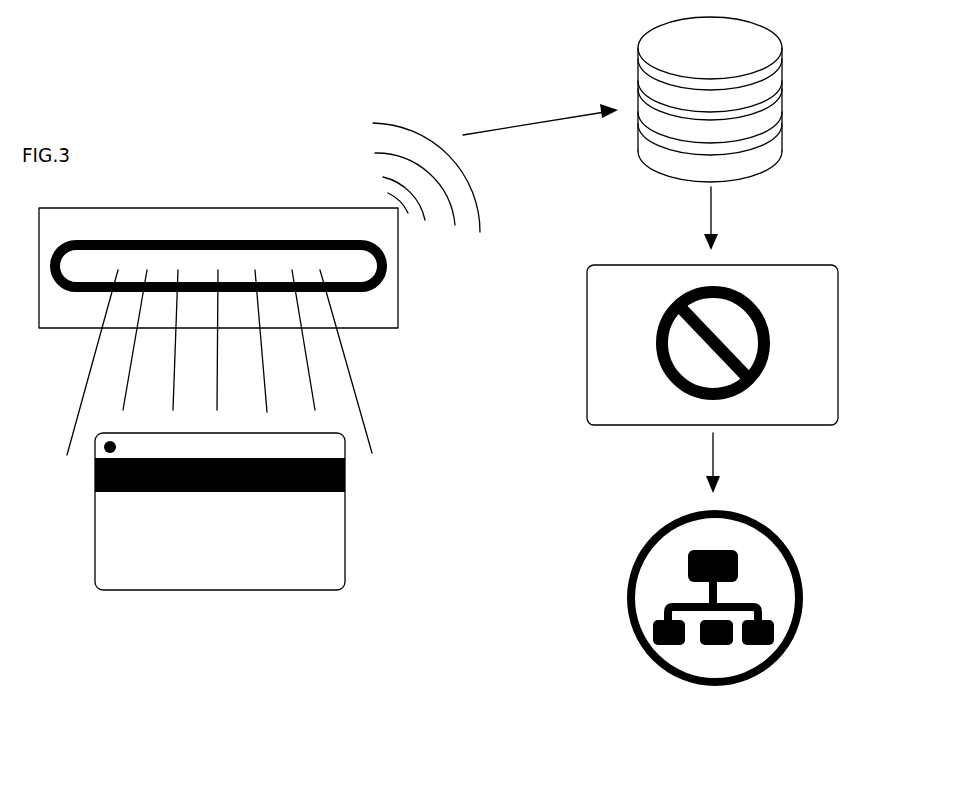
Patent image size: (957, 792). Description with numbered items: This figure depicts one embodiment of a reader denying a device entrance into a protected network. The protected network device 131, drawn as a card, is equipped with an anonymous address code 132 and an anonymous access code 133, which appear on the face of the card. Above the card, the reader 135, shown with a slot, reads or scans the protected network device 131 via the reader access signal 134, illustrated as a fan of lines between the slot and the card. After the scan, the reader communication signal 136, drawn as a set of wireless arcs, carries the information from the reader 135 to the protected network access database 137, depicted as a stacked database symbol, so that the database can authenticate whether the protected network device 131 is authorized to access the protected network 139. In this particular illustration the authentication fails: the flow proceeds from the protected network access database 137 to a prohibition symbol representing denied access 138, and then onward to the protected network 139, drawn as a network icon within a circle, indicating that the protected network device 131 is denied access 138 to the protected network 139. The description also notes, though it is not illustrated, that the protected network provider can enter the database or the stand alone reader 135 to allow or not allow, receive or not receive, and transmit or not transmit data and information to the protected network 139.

The protected network device 131 is at (338, 511).
The anonymous address code 132 is at (114, 580).
The anonymous access code 133 is at (317, 580).
The reader access signal 134 is at (353, 391).
The reader 135 is at (183, 223).
The reader communication signal 136 is at (432, 133).
The protected network access database 137 is at (773, 78).
The denied access 138 is at (795, 275).
The protected network 139 is at (763, 526).